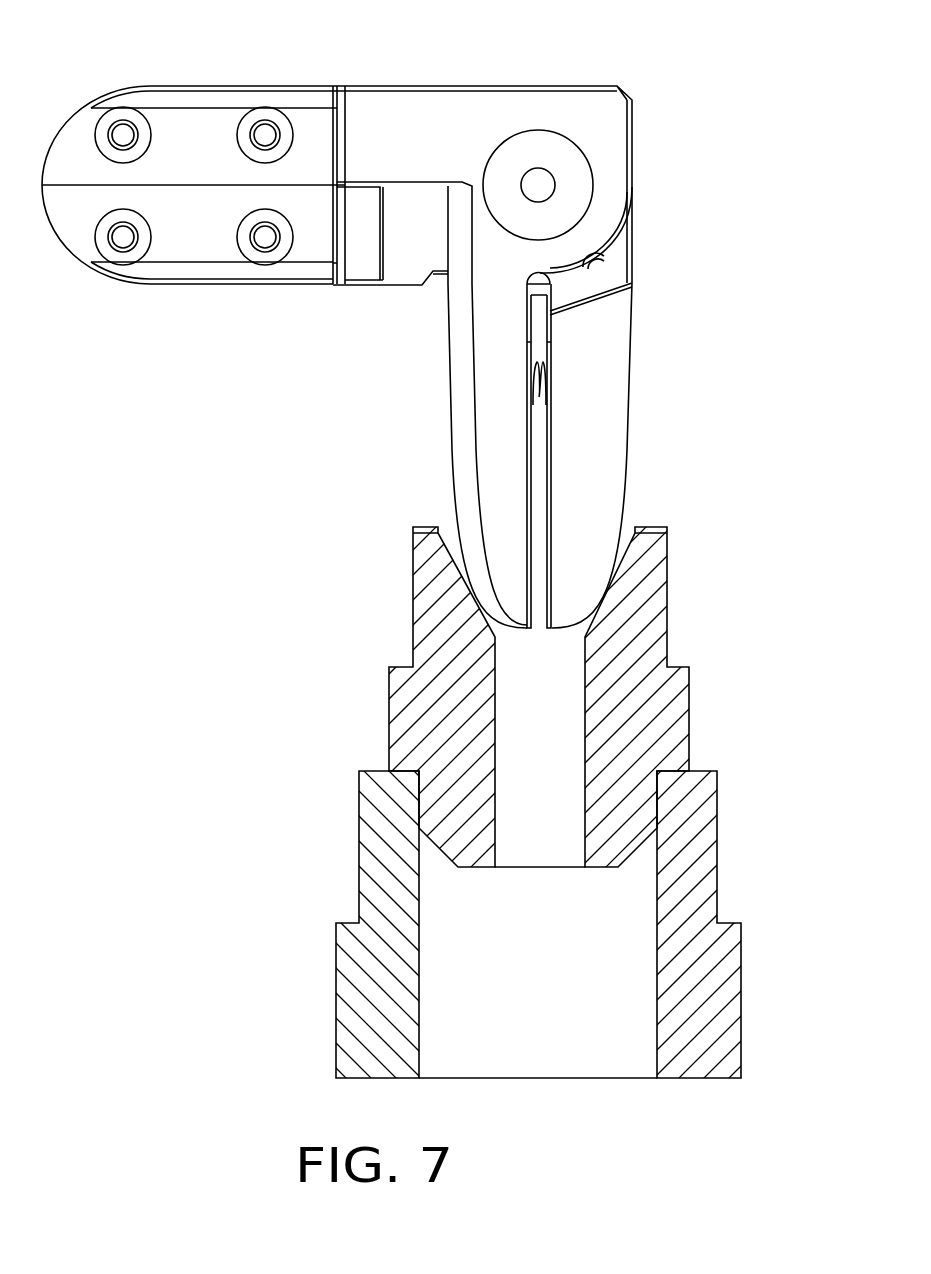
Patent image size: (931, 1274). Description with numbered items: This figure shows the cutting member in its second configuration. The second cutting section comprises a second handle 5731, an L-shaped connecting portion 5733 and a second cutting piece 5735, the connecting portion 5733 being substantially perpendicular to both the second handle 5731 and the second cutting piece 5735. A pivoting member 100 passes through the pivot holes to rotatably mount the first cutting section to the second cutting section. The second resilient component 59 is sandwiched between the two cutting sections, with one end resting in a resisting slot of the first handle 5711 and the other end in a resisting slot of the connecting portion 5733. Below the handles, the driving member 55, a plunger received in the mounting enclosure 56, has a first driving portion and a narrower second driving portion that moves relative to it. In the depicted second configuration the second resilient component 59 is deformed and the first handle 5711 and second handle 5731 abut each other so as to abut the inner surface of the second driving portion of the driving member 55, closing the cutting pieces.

The second cutting piece 5735 is at (187, 133).
The connecting portion 5733 is at (408, 117).
The pivoting member 100 is at (570, 178).
The second handle 5731 is at (485, 427).
The first handle 5711 is at (585, 465).
The second resilient component 59 is at (548, 377).
The driving member 55 is at (625, 603).
The mounting enclosure 56 is at (697, 876).